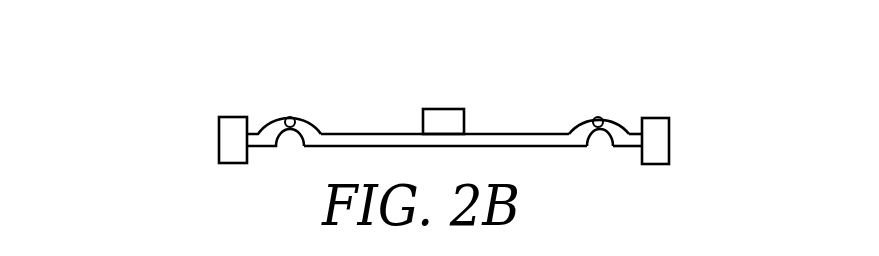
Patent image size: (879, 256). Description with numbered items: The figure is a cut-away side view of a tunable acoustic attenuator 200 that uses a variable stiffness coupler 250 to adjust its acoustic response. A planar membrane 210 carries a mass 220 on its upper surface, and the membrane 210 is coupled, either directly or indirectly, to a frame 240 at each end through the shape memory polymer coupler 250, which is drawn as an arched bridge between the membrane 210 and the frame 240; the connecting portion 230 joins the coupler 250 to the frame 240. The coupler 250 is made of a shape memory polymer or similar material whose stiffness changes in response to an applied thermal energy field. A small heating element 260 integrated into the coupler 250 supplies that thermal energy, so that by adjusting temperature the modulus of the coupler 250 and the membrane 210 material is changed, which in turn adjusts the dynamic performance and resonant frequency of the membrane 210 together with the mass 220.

The tunable acoustic attenuator 200 is at (232, 76).
The membrane 210 is at (524, 140).
The mass 220 is at (443, 119).
The connecting arm 230 is at (629, 131).
The frame 240 is at (654, 119).
The variable stiffness coupler 250 is at (582, 127).
The heating element 260 is at (598, 128).